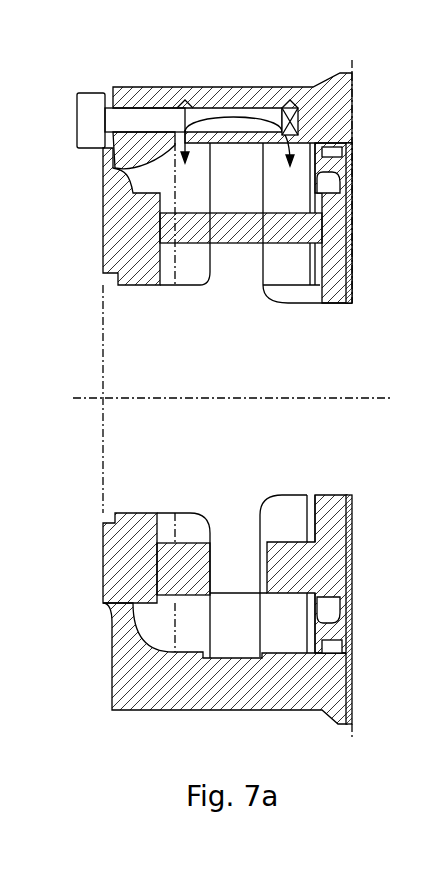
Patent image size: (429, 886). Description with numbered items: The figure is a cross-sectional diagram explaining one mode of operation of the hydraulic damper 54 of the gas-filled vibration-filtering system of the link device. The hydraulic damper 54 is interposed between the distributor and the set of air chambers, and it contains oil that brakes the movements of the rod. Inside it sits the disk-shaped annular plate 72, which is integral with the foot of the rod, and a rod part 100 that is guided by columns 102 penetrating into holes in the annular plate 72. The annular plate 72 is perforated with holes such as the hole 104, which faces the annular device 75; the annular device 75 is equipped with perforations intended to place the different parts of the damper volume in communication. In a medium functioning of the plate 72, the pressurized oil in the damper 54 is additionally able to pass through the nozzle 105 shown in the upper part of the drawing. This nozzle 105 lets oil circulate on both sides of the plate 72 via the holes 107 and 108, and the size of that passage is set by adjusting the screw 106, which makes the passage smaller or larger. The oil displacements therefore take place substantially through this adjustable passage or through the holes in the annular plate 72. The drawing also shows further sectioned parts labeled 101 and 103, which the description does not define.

The hydraulic damper 54 is at (313, 60).
The annular plate 72 is at (238, 633).
The annular device 75 is at (135, 597).
The rod part 100 is at (342, 335).
The bearing ring 101 is at (332, 243).
The columns 102 is at (312, 227).
The cover block 103 is at (142, 237).
The hole 104 is at (217, 568).
The nozzle 105 is at (240, 108).
The screw 106 is at (90, 103).
The hole 107 is at (175, 145).
The hole 108 is at (307, 130).